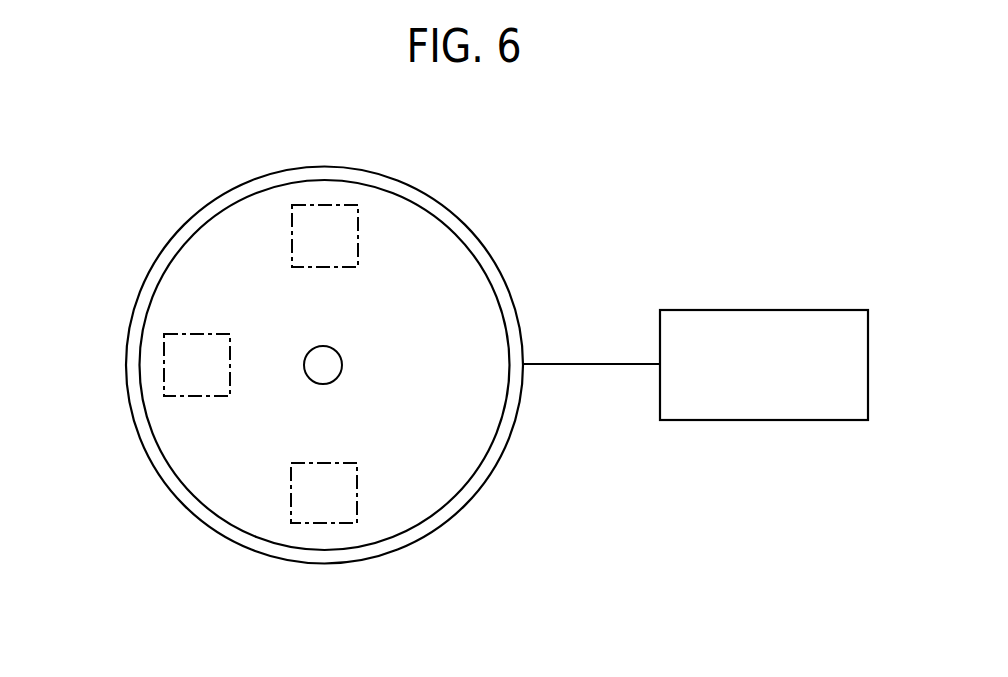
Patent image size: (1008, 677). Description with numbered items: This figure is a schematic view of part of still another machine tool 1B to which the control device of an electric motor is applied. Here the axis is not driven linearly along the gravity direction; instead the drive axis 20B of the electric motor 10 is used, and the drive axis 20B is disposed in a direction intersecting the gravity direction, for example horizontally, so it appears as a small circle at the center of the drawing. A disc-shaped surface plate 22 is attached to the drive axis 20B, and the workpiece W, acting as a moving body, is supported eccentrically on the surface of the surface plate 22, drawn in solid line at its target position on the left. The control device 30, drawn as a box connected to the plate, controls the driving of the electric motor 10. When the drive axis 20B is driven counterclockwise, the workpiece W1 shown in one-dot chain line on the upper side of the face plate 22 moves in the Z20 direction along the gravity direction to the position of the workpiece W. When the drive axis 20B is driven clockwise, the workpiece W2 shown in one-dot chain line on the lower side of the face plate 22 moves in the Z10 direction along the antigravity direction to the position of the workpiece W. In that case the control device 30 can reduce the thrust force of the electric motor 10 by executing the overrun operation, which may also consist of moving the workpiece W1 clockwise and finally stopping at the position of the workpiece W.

The machine tool 1B is at (574, 144).
The electric motor 10 is at (443, 206).
The surface plate 22 is at (482, 325).
The drive axis 20B is at (342, 365).
The control device 30 is at (763, 310).
The workpiece W is at (164, 365).
The workpiece W1 is at (325, 205).
The workpiece W2 is at (357, 503).
The Z10 direction Z10 is at (156, 578).
The Z20 direction Z20 is at (156, 152).